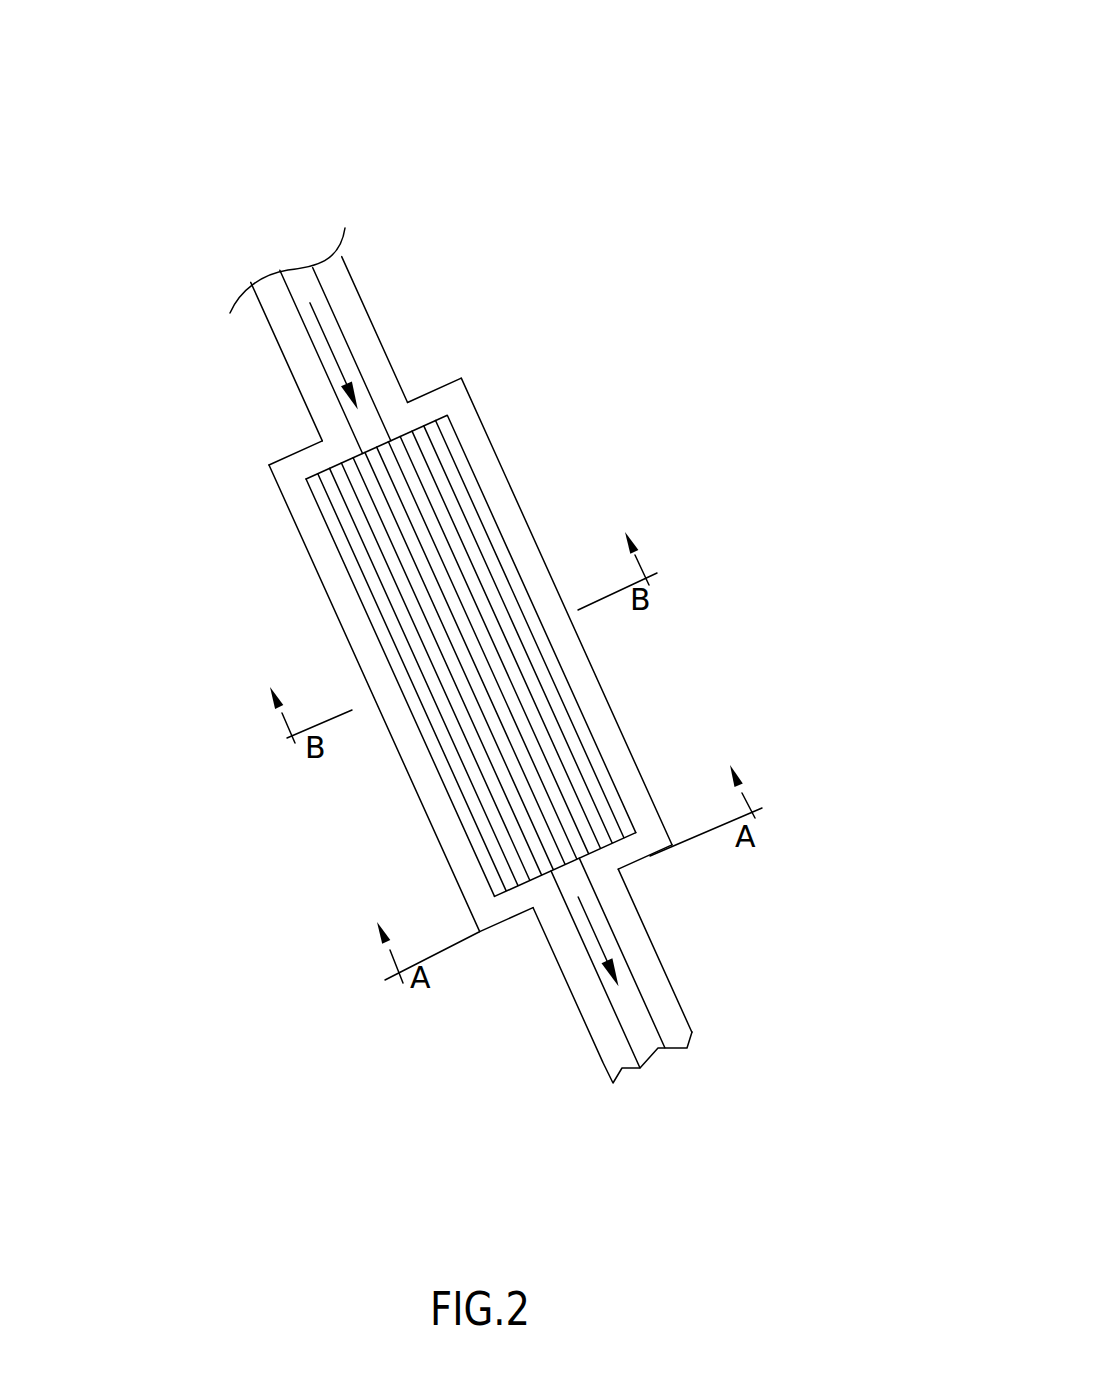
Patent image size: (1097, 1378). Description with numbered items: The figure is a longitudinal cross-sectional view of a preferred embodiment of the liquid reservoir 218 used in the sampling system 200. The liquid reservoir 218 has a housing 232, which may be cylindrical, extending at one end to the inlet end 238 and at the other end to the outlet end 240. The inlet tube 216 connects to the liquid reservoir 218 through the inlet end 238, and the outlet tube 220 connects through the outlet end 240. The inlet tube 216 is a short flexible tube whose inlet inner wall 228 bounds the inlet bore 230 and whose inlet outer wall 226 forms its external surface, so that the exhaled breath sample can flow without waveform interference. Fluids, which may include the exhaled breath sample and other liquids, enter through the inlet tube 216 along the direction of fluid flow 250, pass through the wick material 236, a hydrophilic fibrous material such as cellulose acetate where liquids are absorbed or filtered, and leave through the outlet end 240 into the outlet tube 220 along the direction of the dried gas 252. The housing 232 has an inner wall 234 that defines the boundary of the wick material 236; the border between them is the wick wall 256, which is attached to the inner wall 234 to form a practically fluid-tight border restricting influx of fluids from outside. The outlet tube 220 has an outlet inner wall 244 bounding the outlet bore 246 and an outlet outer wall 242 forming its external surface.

The sampling system 200 is at (622, 63).
The inlet tube 216 is at (267, 355).
The liquid reservoir 218 is at (310, 588).
The outlet tube 220 is at (558, 983).
The inlet outer wall 226 is at (368, 305).
The inlet inner wall 228 is at (328, 290).
The inlet bore 230 is at (302, 297).
The housing 232 is at (508, 478).
The inner wall 234 is at (513, 562).
The wick material 236 is at (562, 777).
The inlet end 238 is at (438, 393).
The outlet end 240 is at (647, 862).
The outlet outer wall 242 is at (597, 1045).
The outlet inner wall 244 is at (622, 1040).
The outlet bore 246 is at (635, 1020).
The direction of fluid flow 250 is at (347, 350).
The direction of the dried gas 252 is at (602, 947).
The wick wall 256 is at (443, 785).